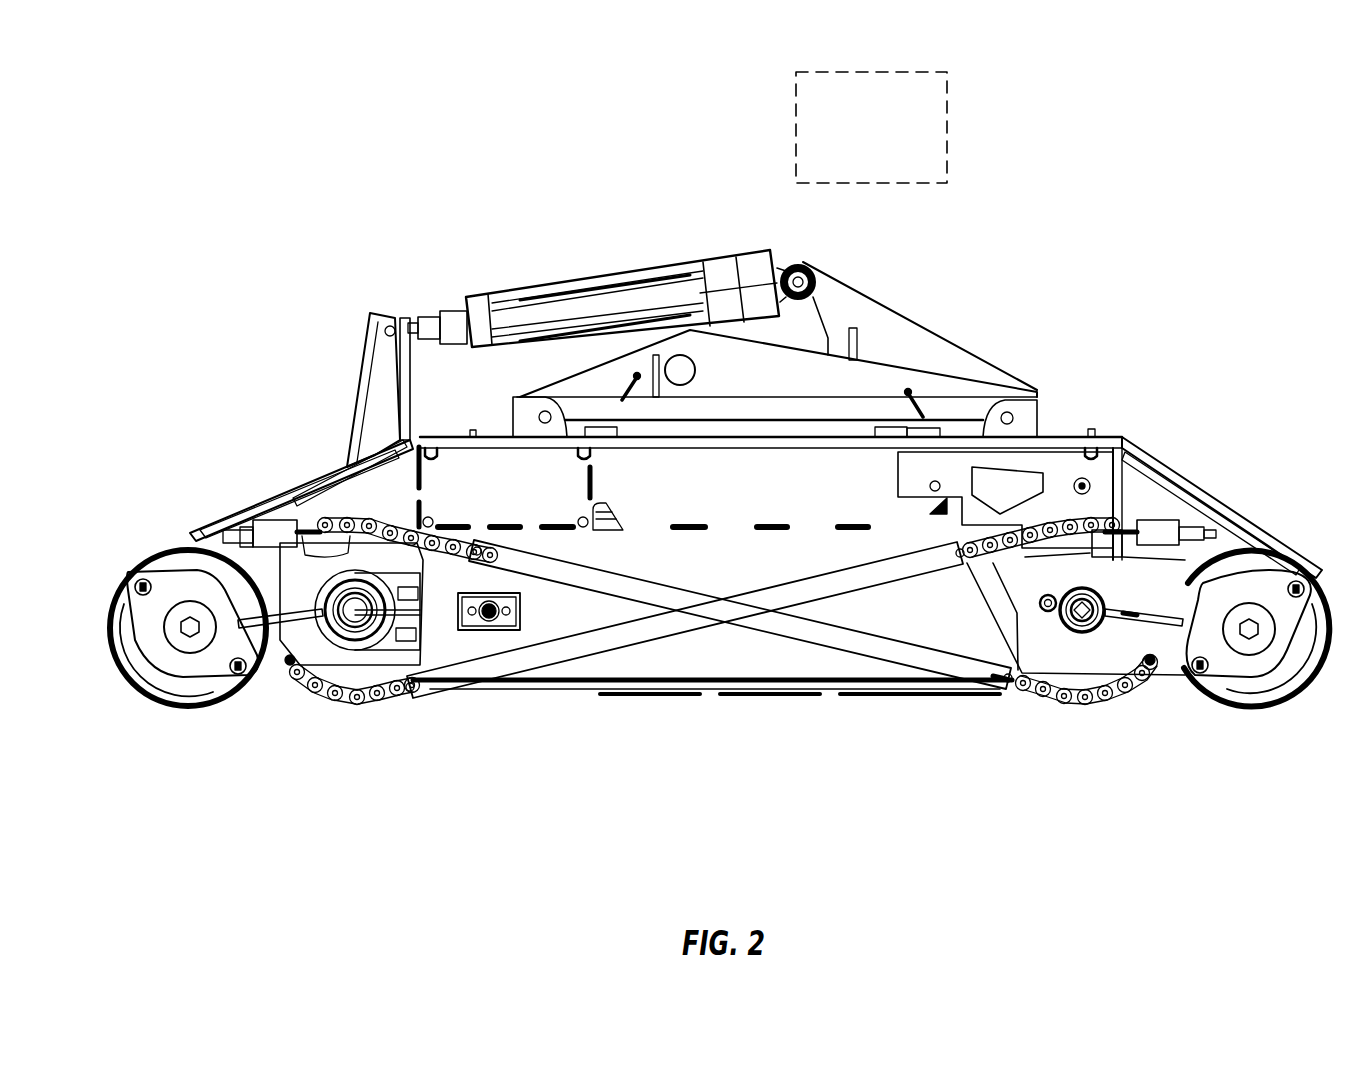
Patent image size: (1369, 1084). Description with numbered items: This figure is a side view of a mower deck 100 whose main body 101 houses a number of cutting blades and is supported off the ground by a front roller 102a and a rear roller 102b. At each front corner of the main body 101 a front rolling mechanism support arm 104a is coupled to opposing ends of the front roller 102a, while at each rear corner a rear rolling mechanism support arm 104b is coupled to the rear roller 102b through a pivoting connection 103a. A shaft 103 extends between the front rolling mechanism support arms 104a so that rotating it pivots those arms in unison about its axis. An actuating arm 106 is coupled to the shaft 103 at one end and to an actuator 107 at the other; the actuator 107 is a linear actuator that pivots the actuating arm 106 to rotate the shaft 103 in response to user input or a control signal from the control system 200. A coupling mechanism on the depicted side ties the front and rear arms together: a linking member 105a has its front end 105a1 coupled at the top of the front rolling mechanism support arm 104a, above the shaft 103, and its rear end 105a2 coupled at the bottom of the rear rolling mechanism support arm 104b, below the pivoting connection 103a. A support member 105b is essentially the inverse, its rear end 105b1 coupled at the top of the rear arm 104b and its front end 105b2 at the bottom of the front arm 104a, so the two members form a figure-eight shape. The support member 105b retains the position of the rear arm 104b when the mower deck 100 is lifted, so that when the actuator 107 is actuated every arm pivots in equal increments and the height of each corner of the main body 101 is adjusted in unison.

The mower deck 100 is at (1196, 124).
The main body 101 is at (1064, 420).
The front roller 102a is at (152, 552).
The rear roller 102b is at (1250, 546).
The shaft 103 is at (343, 642).
The pivoting connection 103a is at (1078, 638).
The front rolling mechanism support arm 104a is at (271, 592).
The rear rolling mechanism support arm 104b is at (1197, 620).
The linking member 105a is at (588, 594).
The support member 105b is at (682, 640).
The front end of linking member 105a1 is at (279, 504).
The rear end of linking member 105a2 is at (1160, 680).
The rear end of support member 105b1 is at (1166, 500).
The front end of support member 105b2 is at (280, 694).
The actuating arm 106 is at (352, 390).
The actuator 107 is at (550, 285).
The control system 200 is at (888, 172).